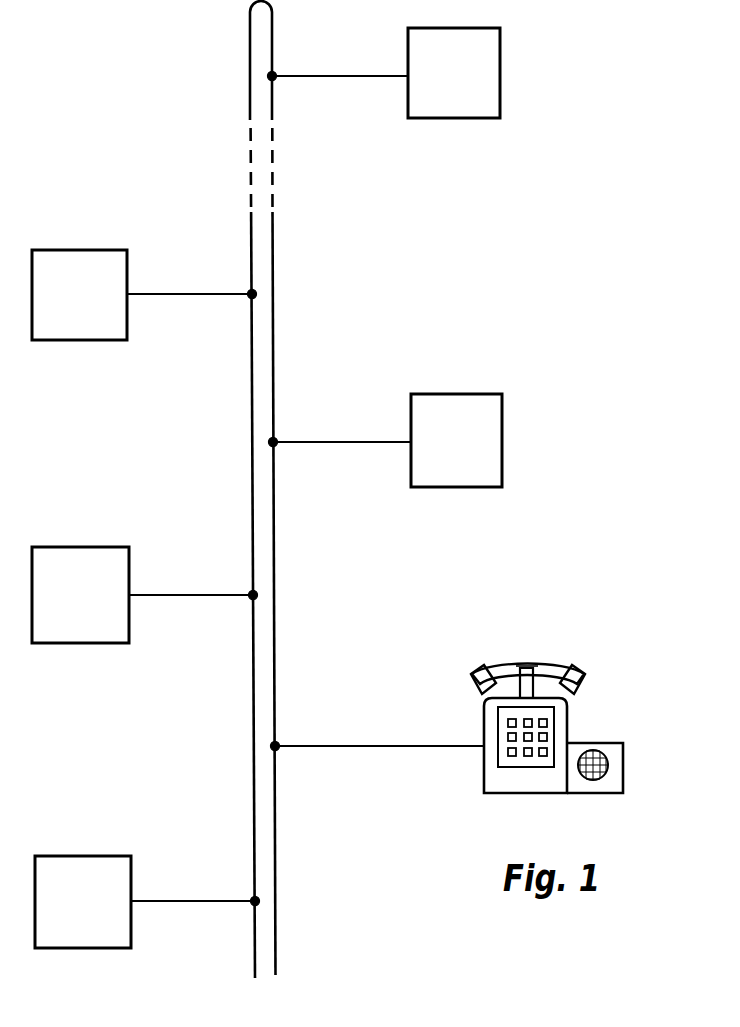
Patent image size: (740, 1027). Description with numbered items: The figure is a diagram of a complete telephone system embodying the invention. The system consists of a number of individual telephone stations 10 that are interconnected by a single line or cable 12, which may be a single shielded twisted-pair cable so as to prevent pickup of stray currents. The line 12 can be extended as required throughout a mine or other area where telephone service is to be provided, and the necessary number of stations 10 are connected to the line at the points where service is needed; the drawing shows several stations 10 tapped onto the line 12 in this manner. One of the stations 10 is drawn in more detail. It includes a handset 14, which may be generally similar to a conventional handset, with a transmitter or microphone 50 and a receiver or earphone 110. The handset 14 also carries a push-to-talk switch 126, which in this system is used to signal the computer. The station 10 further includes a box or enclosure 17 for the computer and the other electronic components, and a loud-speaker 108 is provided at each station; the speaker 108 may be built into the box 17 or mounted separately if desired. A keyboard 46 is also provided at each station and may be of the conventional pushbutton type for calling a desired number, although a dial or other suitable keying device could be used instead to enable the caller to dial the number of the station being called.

The telephone station 10 is at (500, 80).
The line or cable 12 is at (257, 853).
The handset 14 is at (526, 661).
The box or enclosure 17 is at (483, 775).
The keyboard 46 is at (554, 736).
The transmitter or microphone 50 is at (572, 699).
The loud-speaker 108 is at (610, 763).
The receiver or earphone 110 is at (484, 699).
The push-to-talk switch 126 is at (528, 664).